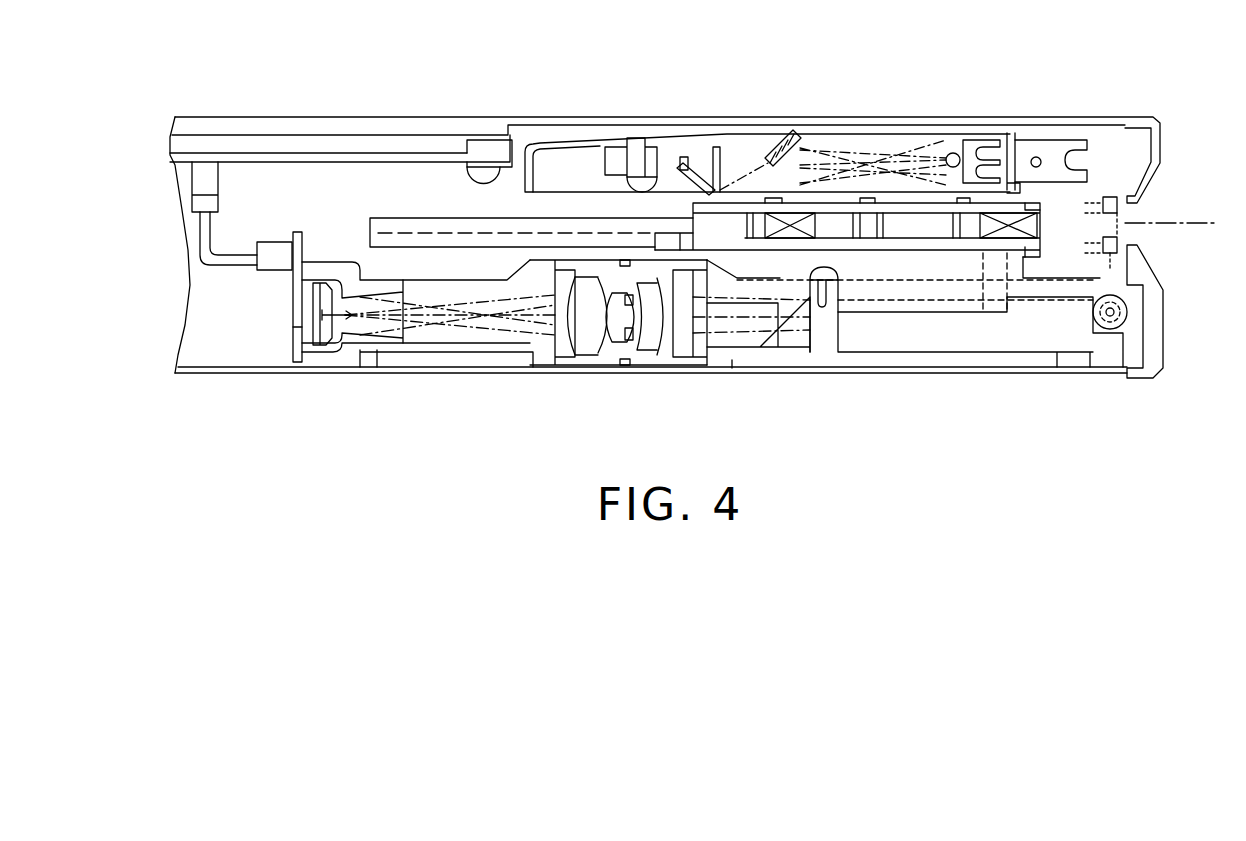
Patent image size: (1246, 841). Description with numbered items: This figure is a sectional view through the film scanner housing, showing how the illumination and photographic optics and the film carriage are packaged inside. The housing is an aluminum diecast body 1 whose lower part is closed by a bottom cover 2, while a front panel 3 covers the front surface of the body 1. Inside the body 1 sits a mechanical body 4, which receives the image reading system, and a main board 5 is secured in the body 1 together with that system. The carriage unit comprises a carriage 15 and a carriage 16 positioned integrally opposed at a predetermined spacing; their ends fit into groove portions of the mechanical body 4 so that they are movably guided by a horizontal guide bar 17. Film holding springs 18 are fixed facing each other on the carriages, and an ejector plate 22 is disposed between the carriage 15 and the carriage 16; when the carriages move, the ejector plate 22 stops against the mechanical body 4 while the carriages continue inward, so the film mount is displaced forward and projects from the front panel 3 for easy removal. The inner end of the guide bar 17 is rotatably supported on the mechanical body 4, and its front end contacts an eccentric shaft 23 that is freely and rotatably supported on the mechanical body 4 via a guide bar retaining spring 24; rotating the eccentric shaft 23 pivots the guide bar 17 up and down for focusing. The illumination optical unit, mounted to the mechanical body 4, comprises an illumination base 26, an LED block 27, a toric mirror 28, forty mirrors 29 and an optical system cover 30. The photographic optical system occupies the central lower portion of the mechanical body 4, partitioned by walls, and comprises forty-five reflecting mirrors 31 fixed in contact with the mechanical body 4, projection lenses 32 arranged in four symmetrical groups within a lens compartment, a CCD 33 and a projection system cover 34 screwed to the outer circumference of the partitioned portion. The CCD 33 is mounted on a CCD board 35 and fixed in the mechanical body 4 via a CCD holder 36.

The body 1 is at (403, 120).
The bottom cover 2 is at (184, 373).
The front panel 3 is at (1160, 345).
The mechanical body 4 is at (825, 342).
The main board 5 is at (318, 155).
The carriage 15 is at (1010, 140).
The carriage 16 is at (923, 262).
The guide bar 17 is at (1047, 288).
The film holding spring 18 is at (822, 218).
The ejector plate 22 is at (680, 240).
The eccentric shaft 23 is at (1107, 330).
The guide bar retaining spring 24 is at (1107, 288).
The illumination base 26 is at (590, 137).
The LED block 27 is at (700, 150).
The toric mirror 28 is at (955, 152).
The forty mirrors 29 is at (775, 133).
The optical system cover 30 is at (555, 185).
The forty-five reflecting mirrors 31 is at (781, 333).
The projection lenses 32 is at (613, 352).
The CCD 33 is at (323, 335).
The projection system cover 34 is at (505, 300).
The CCD board 35 is at (292, 328).
The CCD holder 36 is at (350, 353).